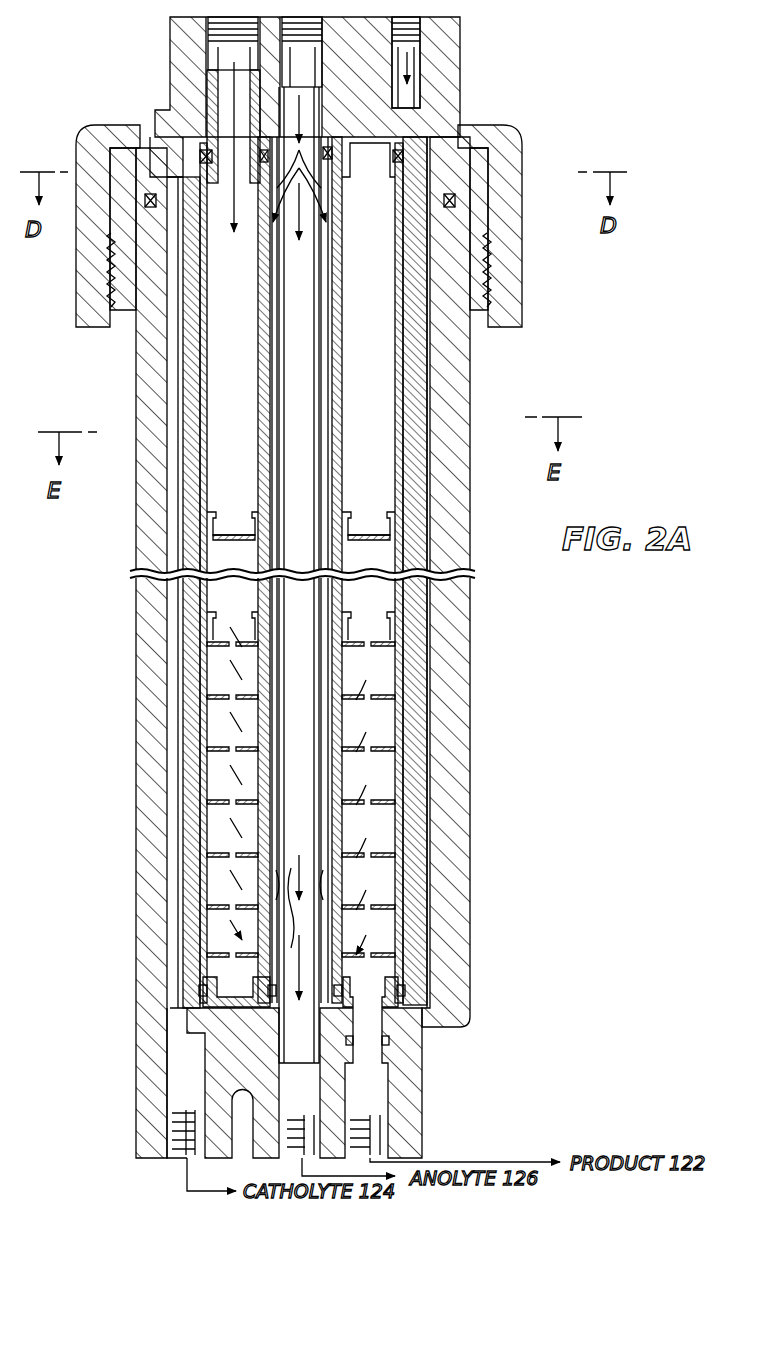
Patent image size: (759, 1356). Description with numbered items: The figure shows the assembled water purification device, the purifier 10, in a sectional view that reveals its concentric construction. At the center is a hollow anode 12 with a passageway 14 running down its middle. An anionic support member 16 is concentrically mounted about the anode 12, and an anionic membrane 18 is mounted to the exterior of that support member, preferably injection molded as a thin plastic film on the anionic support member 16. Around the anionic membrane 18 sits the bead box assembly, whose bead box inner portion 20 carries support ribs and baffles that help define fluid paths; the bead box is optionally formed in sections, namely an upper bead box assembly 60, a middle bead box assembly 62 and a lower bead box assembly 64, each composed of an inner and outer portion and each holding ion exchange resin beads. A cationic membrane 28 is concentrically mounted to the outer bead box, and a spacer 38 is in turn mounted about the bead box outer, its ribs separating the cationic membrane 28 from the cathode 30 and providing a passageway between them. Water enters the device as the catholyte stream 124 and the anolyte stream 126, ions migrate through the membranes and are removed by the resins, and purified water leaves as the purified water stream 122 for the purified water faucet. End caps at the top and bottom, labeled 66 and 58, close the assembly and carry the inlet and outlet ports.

The purifier 10 is at (502, 405).
The hollow anode 12 is at (280, 828).
The passageway 14 is at (312, 456).
The anionic support member 16 is at (263, 378).
The anionic membrane 18 is at (334, 781).
The bead box inner portion 20 is at (258, 425).
The cationic membrane 28 is at (406, 878).
The cathode 30 is at (440, 703).
The spacer 38 is at (406, 655).
The bottom end cap 58 is at (424, 1087).
The upper bead box assembly 60 is at (404, 372).
The middle bead box assembly 62 is at (402, 532).
The lower bead box assembly 64 is at (396, 838).
The top end cap 66 is at (461, 94).
The purified water stream 122 is at (235, 60).
The catholyte stream 124 is at (408, 58).
The anolyte stream 126 is at (300, 57).